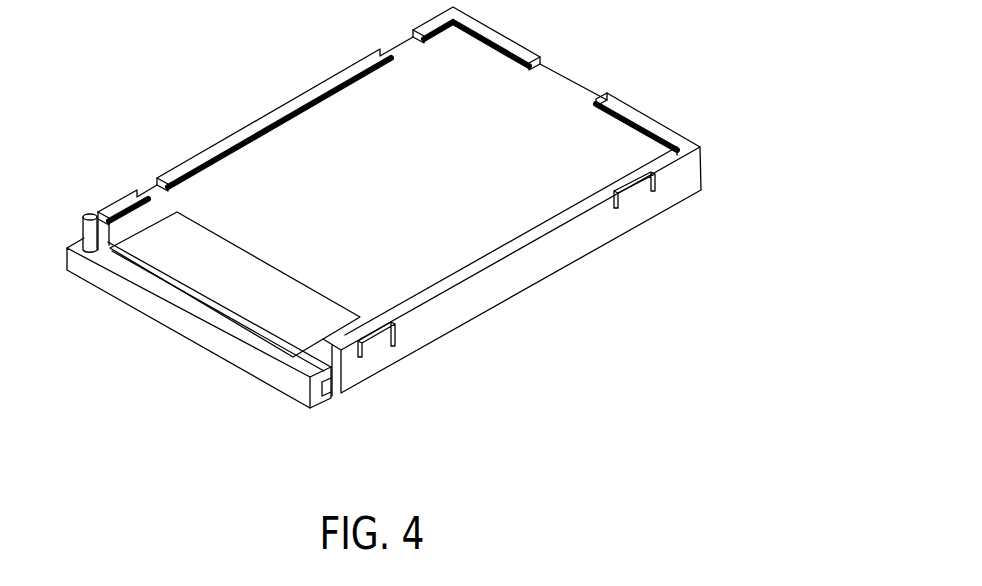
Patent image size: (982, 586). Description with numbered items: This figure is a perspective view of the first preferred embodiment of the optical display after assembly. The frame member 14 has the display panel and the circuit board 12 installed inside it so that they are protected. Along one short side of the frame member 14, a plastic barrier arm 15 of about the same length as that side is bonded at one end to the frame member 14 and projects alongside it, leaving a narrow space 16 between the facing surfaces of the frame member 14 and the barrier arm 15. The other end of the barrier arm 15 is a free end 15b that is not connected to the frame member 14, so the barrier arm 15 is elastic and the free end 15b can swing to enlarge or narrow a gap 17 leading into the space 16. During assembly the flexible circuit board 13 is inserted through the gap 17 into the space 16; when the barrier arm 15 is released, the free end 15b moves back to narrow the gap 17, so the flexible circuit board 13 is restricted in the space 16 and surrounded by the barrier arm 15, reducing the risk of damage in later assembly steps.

The circuit board 12 is at (310, 122).
The flexible circuit board 13 is at (190, 235).
The frame member 14 is at (543, 268).
The barrier arm 15 is at (210, 345).
The free end 15b is at (327, 387).
The space 16 is at (150, 271).
The gap 17 is at (338, 372).